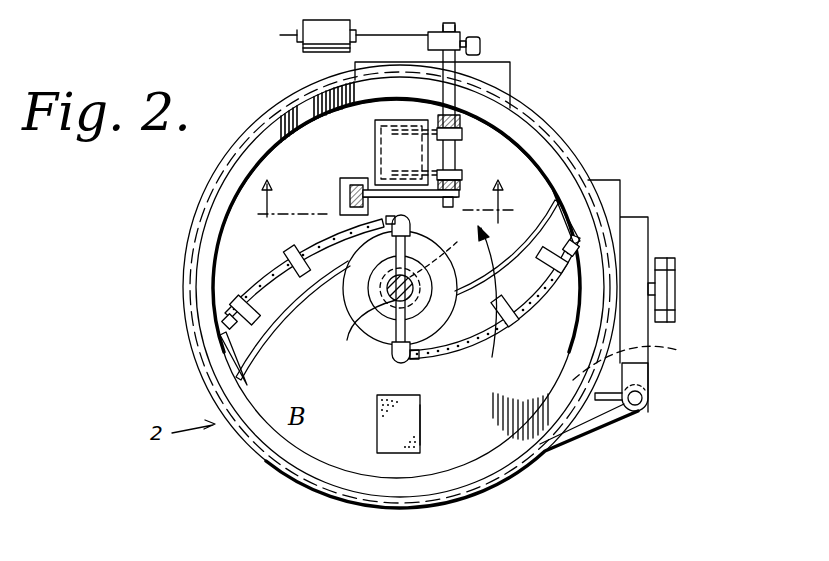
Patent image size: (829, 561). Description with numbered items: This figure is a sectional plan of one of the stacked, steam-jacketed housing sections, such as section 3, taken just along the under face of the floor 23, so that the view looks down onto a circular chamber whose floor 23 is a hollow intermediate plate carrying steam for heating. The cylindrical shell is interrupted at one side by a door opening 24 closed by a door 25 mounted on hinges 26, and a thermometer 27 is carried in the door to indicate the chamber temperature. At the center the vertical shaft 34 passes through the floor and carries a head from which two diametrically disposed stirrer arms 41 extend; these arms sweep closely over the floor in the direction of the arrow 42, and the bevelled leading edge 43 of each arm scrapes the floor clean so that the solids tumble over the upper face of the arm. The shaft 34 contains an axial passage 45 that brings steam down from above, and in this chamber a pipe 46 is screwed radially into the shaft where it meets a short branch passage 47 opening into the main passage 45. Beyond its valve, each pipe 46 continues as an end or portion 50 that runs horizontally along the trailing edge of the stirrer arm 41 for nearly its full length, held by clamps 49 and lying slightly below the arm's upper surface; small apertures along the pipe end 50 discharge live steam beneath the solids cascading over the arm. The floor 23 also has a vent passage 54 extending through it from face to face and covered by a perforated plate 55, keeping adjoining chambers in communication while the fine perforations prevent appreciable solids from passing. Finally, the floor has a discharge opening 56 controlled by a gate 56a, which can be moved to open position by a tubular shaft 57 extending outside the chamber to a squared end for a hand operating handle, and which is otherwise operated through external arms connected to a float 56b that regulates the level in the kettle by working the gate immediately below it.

The housing section 3 is at (381, 201).
The floor 23 is at (293, 160).
The door opening 24 is at (639, 363).
The door 25 is at (640, 228).
The hinges 26 is at (640, 414).
The thermometer 27 is at (676, 290).
The shaft 34 is at (353, 333).
The stirrer arm 41 is at (272, 313).
The arrow 42 is at (484, 344).
The leading edge 43 is at (247, 383).
The axial passage 45 is at (349, 307).
The pipe 46 is at (411, 229).
The branch passage 47 is at (422, 275).
The clamps 49 is at (294, 255).
The pipe end 50 is at (286, 268).
The vent passage 54 is at (377, 426).
The perforated plate 55 is at (421, 421).
The discharge opening 56 is at (375, 137).
The gate 56a is at (386, 155).
The float 56b is at (352, 188).
The tubular shaft 57 is at (458, 150).